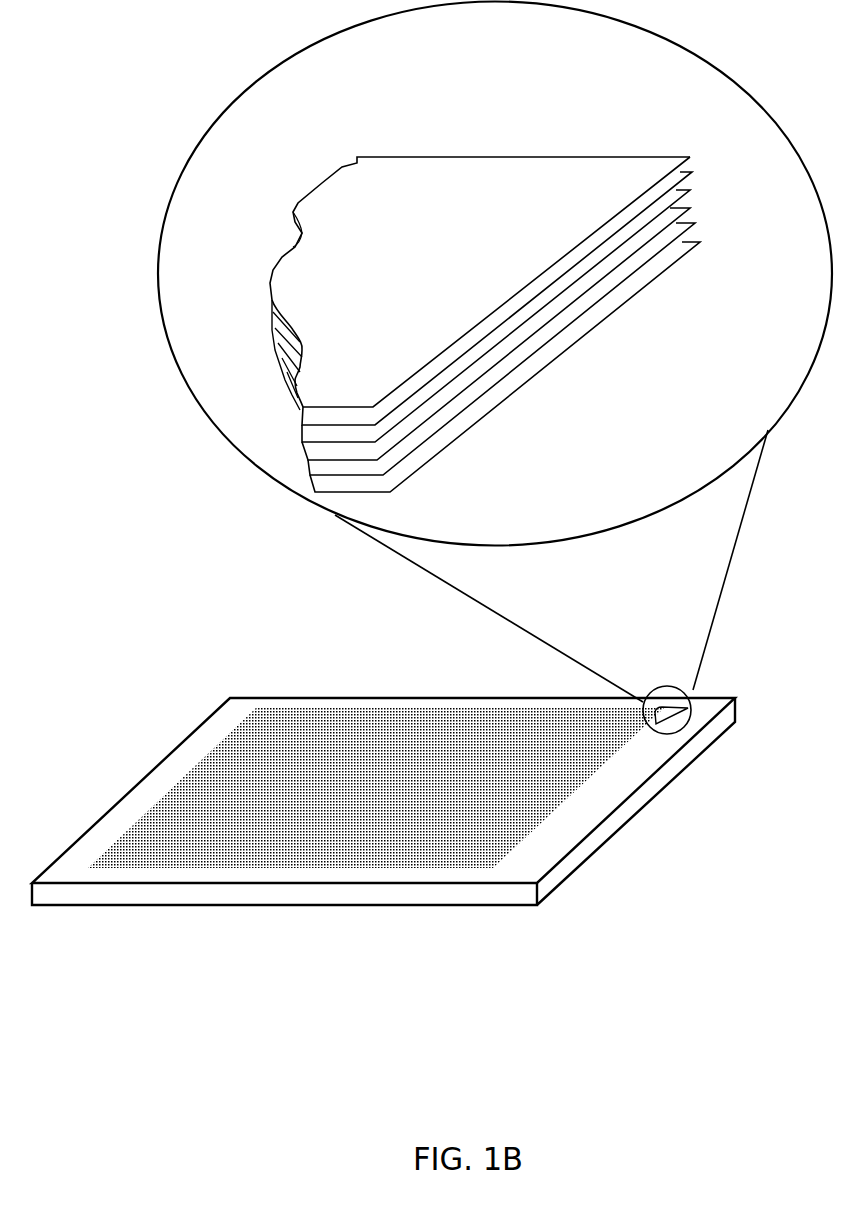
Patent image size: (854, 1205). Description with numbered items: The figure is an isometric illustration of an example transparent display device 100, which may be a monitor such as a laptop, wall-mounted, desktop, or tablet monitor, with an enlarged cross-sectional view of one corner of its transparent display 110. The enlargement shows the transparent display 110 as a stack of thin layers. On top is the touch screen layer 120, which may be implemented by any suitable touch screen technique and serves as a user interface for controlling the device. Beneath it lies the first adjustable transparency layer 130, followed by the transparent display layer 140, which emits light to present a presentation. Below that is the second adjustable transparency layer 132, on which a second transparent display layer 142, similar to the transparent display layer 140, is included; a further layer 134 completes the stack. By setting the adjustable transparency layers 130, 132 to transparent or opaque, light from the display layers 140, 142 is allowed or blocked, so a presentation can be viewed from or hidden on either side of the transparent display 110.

The transparent display device 100 is at (187, 642).
The transparent display 110 is at (568, 790).
The touch screen layer 120 is at (628, 157).
The first adjustable transparency layer 130 is at (680, 178).
The transparent display layer 140 is at (690, 190).
The second adjustable transparency layer 132 is at (690, 210).
The second transparent display layer 142 is at (695, 225).
The bottom layer 134 is at (697, 243).